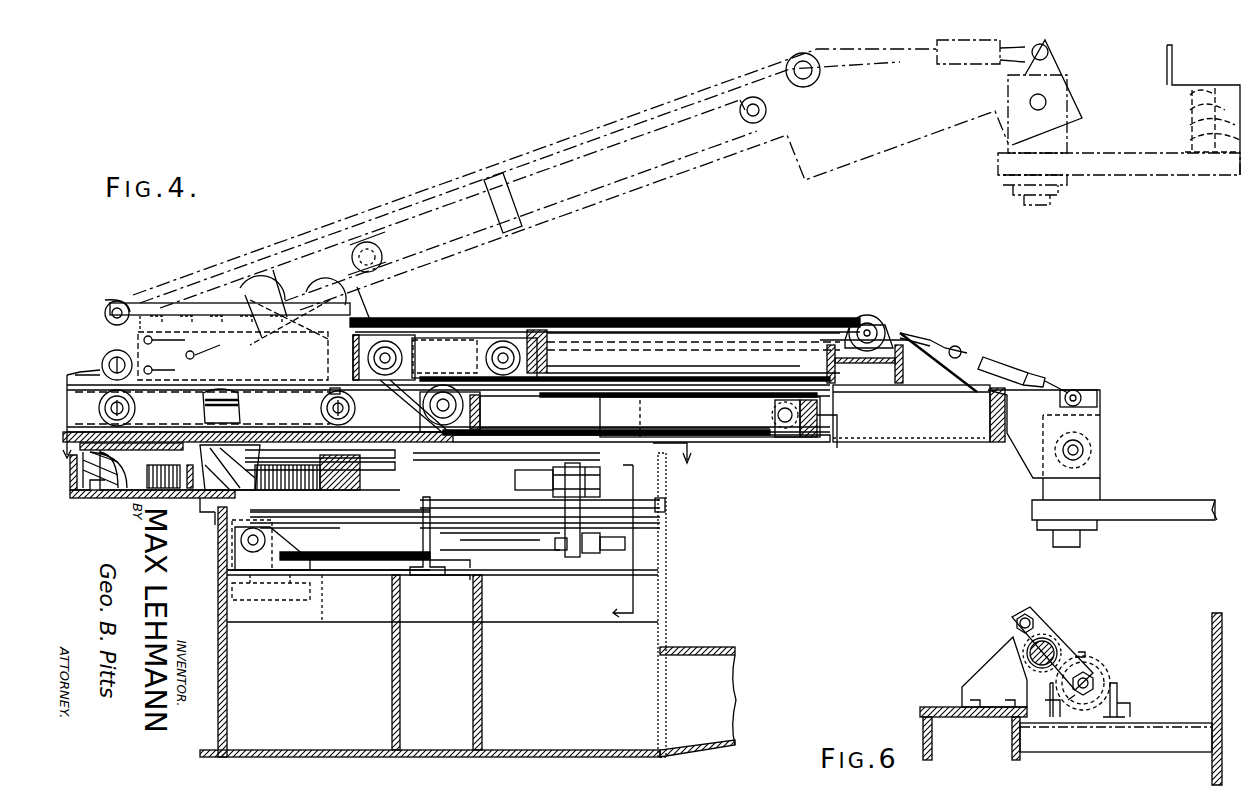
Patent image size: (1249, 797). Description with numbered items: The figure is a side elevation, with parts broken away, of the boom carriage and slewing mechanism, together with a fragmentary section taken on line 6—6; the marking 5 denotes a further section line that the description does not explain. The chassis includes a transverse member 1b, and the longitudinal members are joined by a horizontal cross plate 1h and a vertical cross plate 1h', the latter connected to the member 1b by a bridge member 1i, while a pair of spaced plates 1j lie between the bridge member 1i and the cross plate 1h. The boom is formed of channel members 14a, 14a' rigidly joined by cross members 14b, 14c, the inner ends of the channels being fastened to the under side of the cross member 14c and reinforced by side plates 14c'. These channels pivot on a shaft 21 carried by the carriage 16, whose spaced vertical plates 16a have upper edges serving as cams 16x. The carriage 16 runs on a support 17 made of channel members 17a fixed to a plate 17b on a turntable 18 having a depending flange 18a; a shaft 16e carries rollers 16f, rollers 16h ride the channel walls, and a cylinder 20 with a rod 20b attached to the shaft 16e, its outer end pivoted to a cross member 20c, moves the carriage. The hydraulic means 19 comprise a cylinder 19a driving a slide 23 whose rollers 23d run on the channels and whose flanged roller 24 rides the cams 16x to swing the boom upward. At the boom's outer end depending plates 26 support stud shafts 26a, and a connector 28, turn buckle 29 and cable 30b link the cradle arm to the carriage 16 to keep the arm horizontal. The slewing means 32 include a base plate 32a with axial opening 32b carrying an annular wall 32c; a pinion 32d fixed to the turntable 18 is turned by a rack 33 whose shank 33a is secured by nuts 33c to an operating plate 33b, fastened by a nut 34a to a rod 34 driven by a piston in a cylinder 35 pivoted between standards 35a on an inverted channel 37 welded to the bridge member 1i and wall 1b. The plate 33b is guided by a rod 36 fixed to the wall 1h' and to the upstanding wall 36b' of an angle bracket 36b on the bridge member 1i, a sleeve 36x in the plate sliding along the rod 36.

In FIG. 4, the frame side wall 1b is at (227, 678).
In FIG. 6, the frame side wall 1b is at (1212, 650).
In FIG. 4, the frame bottom plate 1h is at (467, 741).
In FIG. 4, the frame end wall 1h' is at (674, 605).
In FIG. 4, the frame cross plate 1i is at (452, 578).
In FIG. 6, the frame cross plate 1i is at (922, 710).
In FIG. 4, the frame partition 1j is at (400, 678).
In FIG. 4, the section line 5 is at (377, 449).
In FIG. 4, the section line 6 is at (630, 538).
In FIG. 4, the boom base member 14a is at (384, 337).
In FIG. 4, the base member bottom 14a' is at (909, 452).
In FIG. 4, the base end block 14b is at (1000, 442).
In FIG. 4, the support strut 14c is at (865, 377).
In FIG. 4, the support brace 14c' is at (911, 387).
In FIG. 4, the roller 16 is at (380, 414).
In FIG. 4, the boom roller 16a is at (262, 318).
In FIG. 4, the lower roller 16e is at (135, 410).
In FIG. 4, the pivot bushing 16f is at (104, 358).
In FIG. 4, the stop lug 16h is at (335, 388).
In FIG. 4, the guide block 16x is at (445, 356).
In FIG. 4, the end block 17 is at (813, 466).
In FIG. 4, the frame end 17a is at (82, 392).
In FIG. 4, the diagonal brace 17b is at (415, 406).
In FIG. 4, the drive rod 18 is at (375, 460).
In FIG. 4, the drive rod link 18a is at (375, 475).
In FIG. 4, the cylinder 19 is at (570, 358).
In FIG. 4, the piston rod 19a is at (750, 342).
In FIG. 4, the lower cylinder 20 is at (756, 425).
In FIG. 4, the cylinder clamp 20b is at (230, 395).
In FIG. 4, the cylinder port 20c is at (837, 448).
In FIG. 4, the boom pivot 21 is at (104, 330).
In FIG. 4, the carriage 23 is at (468, 345).
In FIG. 4, the carriage rollers 23d is at (398, 343).
In FIG. 4, the lower roller carriage 24 is at (463, 408).
In FIG. 4, the mounting bracket 26 is at (1030, 465).
In FIG. 4, the bracket pivot pin 26a is at (1085, 445).
In FIG. 4, the link pin 28 is at (1070, 388).
In FIG. 4, the turnbuckle link 29 is at (1012, 368).
In FIG. 4, the top rail 30b is at (705, 318).
In FIG. 4, the drive shaft 32 is at (395, 515).
In FIG. 4, the shaft bearing 32a is at (342, 528).
In FIG. 4, the gear housing bracket 32b is at (199, 528).
In FIG. 4, the housing foot 32c is at (90, 500).
In FIG. 4, the housing flange 32d is at (200, 511).
In FIG. 4, the bearing bracket 33 is at (298, 505).
In FIG. 4, the control rod 33a is at (468, 478).
In FIG. 6, the control rod 33a is at (1028, 612).
In FIG. 4, the lever arm 33b is at (572, 560).
In FIG. 6, the lever arm 33b is at (1015, 645).
In FIG. 4, the rod coupling 33c is at (565, 470).
In FIG. 6, the rod coupling 33c is at (1052, 645).
In FIG. 4, the cam shaft 34 is at (500, 553).
In FIG. 6, the cam shaft 34 is at (1110, 670).
In FIG. 4, the cam shaft nut 34a is at (603, 544).
In FIG. 6, the cam shaft nut 34a is at (1072, 720).
In FIG. 4, the cam disc 35 is at (335, 572).
In FIG. 6, the cam disc 35 is at (1100, 665).
In FIG. 4, the cam support 35a is at (271, 592).
In FIG. 6, the cam support 35a is at (1120, 698).
In FIG. 4, the control shaft 36 is at (420, 537).
In FIG. 6, the control shaft 36 is at (1027, 655).
In FIG. 4, the shaft bracket 36b is at (439, 552).
In FIG. 6, the shaft bracket 36b is at (980, 672).
In FIG. 6, the bracket post 36b' is at (1079, 668).
In FIG. 4, the shaft collar 36x is at (665, 508).
In FIG. 4, the channel member 37 is at (319, 611).
In FIG. 6, the channel member 37 is at (1110, 740).